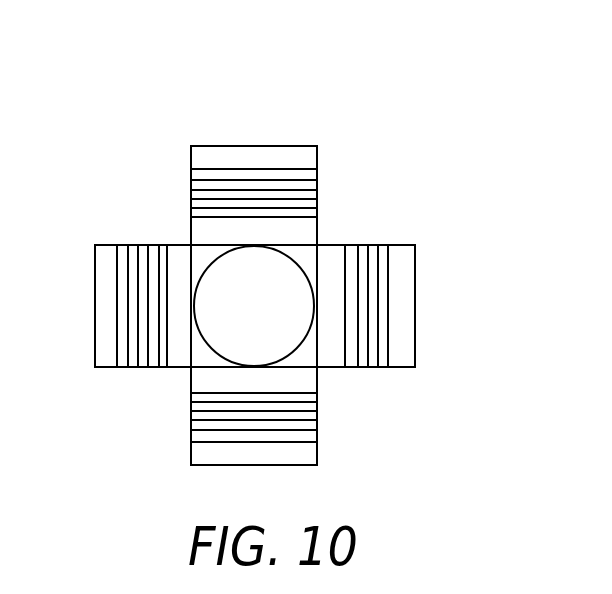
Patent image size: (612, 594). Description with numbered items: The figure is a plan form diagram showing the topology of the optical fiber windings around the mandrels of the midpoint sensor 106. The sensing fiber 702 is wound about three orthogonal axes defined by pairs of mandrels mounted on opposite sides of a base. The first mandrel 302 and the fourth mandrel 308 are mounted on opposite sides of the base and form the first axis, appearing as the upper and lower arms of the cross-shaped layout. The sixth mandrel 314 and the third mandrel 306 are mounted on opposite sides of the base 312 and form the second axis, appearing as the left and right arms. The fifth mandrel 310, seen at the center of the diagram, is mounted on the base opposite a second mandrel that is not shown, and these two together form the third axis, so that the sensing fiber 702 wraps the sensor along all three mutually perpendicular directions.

The midpoint sensor 106 is at (265, 251).
The first mandrel 302 is at (317, 152).
The third mandrel 306 is at (405, 268).
The sixth mandrel 314 is at (95, 272).
The fourth mandrel 308 is at (192, 457).
The fifth mandrel 310 is at (292, 335).
The base 312 is at (198, 355).
The sensing fiber 702 is at (317, 428).